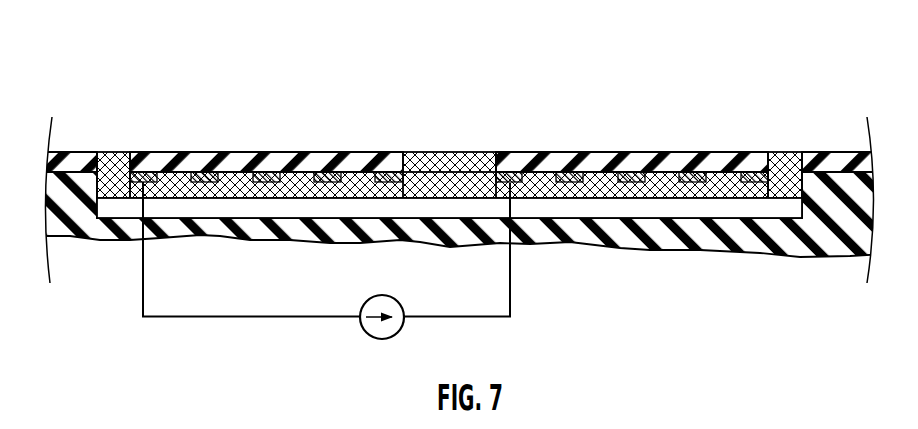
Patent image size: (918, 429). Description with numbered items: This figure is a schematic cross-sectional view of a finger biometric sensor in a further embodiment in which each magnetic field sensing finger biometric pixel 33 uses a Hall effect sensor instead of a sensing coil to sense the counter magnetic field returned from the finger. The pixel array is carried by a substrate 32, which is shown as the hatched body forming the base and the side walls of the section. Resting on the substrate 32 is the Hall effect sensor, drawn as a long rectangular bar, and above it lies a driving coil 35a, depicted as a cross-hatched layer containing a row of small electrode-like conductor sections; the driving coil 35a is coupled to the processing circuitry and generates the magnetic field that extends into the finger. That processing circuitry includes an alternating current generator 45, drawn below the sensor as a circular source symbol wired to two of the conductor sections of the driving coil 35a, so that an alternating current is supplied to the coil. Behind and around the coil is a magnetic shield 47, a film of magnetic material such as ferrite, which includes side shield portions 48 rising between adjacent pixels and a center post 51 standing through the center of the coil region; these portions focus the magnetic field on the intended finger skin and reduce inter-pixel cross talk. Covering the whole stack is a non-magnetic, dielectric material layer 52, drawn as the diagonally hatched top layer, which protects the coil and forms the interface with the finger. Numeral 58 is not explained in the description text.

The magnetic field sensing finger biometric pixel 33 is at (250, 90).
The substrate 32 is at (826, 230).
The driving coil 35a is at (756, 186).
The alternating current generator 45 is at (372, 337).
The magnetic shield 47 is at (118, 200).
The side shield portion 48 is at (117, 160).
The center post 51 is at (450, 160).
The non-magnetic, dielectric material layer 52 is at (80, 160).
The Hall effect sensor 58 is at (702, 205).